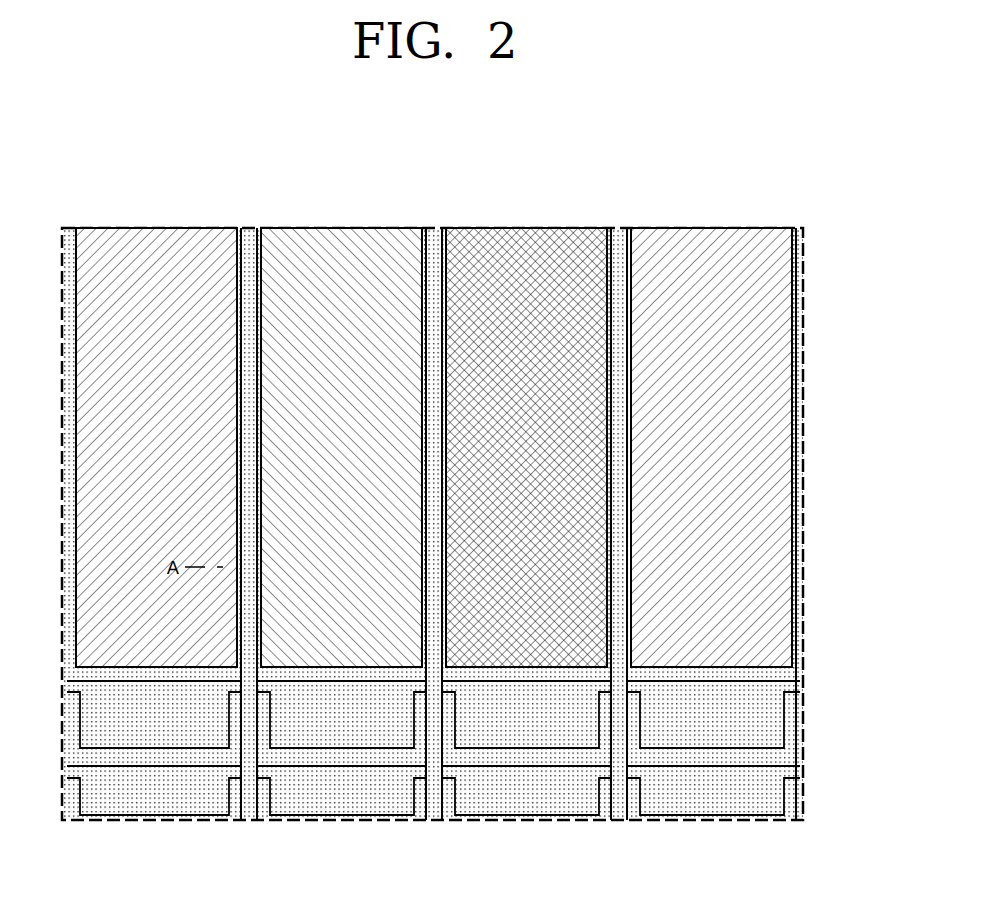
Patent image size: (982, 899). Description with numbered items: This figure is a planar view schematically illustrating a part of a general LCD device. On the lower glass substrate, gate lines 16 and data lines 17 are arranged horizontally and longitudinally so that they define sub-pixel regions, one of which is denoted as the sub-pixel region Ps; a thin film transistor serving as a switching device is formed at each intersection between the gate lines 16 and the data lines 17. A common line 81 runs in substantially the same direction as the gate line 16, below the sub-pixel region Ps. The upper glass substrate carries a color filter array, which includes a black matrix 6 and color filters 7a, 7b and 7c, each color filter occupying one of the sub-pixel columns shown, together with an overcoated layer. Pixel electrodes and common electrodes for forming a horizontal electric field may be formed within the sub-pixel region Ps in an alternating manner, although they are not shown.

The color filter 7a is at (709, 236).
The color filter 7b is at (341, 236).
The color filter 7c is at (523, 236).
The common line 81 is at (778, 720).
The black matrix 6 is at (792, 757).
The gate line 16 is at (707, 812).
The data line 17 is at (614, 822).
The sub-pixel region Ps is at (245, 221).